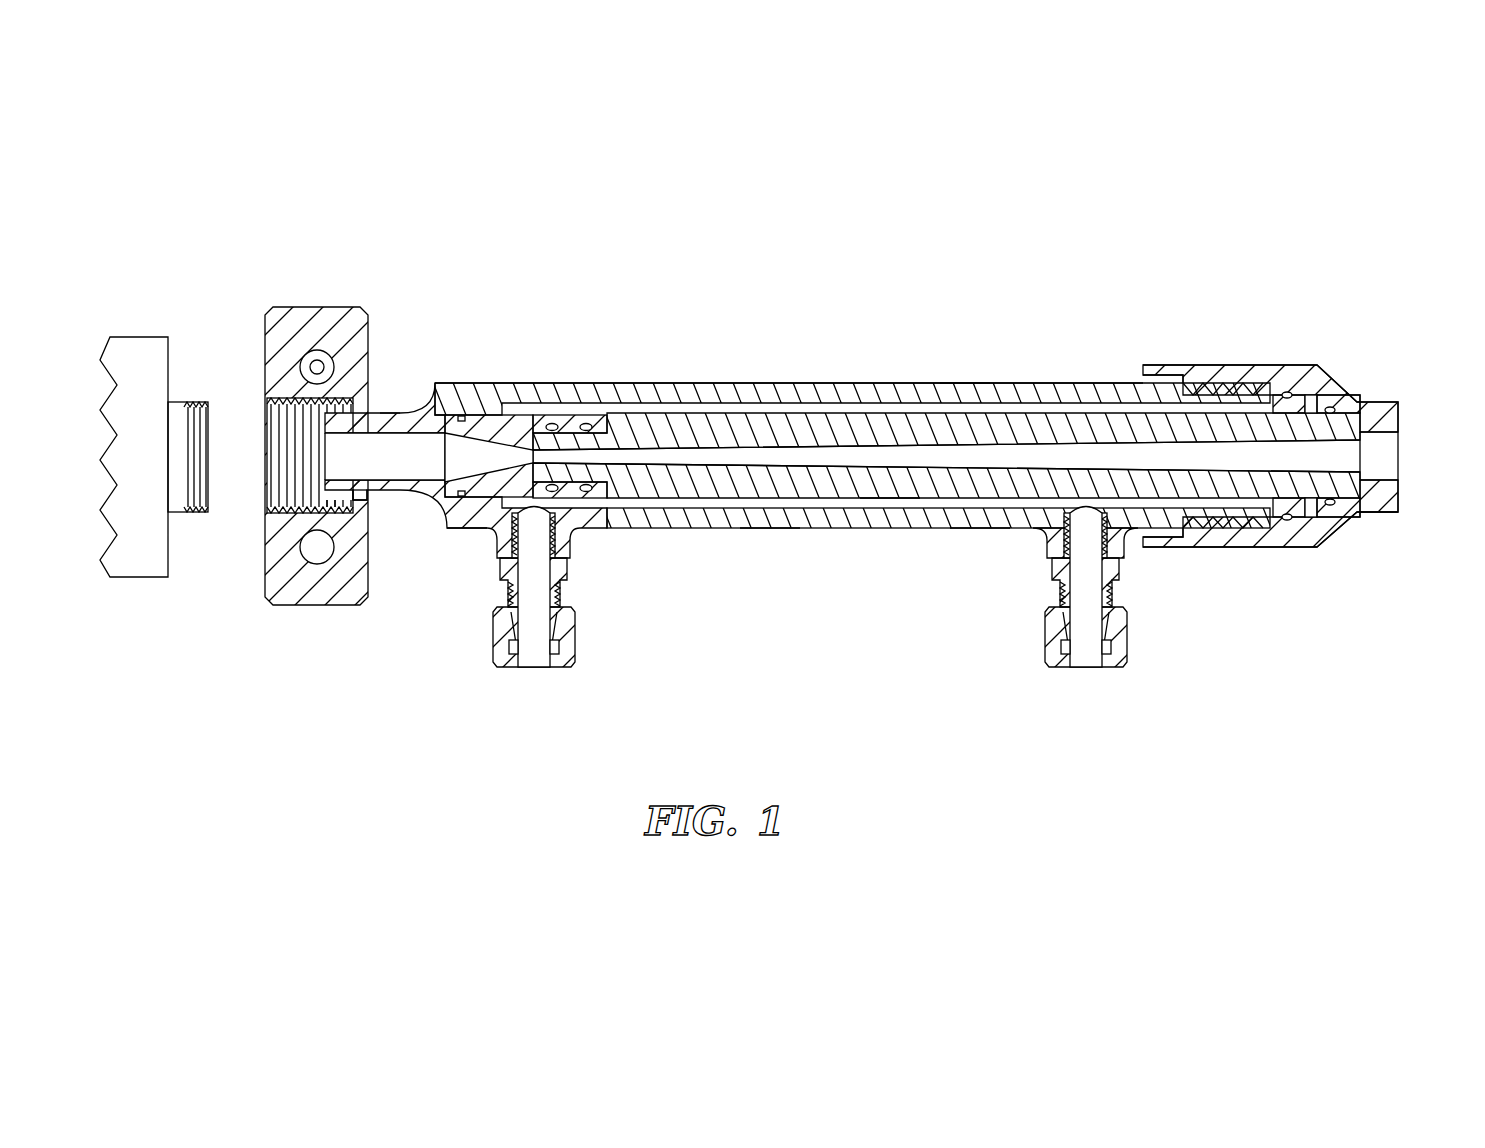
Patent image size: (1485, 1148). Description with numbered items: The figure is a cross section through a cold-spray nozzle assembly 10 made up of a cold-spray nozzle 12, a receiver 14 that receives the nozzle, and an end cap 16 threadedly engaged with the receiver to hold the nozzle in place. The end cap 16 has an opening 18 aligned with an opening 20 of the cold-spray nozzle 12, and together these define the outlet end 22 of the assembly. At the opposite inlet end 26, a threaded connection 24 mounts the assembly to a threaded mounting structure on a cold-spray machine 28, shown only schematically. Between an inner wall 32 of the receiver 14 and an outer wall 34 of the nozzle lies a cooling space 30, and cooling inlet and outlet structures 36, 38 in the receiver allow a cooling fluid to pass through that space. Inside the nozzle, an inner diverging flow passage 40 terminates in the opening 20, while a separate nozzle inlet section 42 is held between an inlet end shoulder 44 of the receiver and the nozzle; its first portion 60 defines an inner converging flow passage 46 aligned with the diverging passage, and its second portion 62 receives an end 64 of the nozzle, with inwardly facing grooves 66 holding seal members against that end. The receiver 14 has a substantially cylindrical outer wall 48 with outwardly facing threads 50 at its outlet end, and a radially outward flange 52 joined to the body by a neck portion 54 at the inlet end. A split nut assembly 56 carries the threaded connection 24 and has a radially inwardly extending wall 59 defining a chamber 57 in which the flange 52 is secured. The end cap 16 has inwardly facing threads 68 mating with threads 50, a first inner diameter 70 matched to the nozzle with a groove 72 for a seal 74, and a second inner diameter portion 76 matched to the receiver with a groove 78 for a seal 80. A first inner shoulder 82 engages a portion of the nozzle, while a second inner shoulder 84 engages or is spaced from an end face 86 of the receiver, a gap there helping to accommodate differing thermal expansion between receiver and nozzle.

The cold-spray nozzle assembly 10 is at (1088, 243).
The cold-spray nozzle 12 is at (863, 428).
The receiver 14 is at (697, 393).
The end cap 16 is at (1325, 389).
The opening 18 is at (1403, 490).
The opening 20 is at (1400, 448).
The outlet end 22 is at (1393, 306).
The threaded connection 24 is at (290, 435).
The inlet end 26 is at (287, 284).
The cold-spray machine 28 is at (152, 461).
The cooling space 30 is at (770, 520).
The inner wall 32 is at (890, 490).
The outer wall 34 is at (978, 510).
The cooling inlet structure 36 is at (570, 622).
The cooling outlet structure 38 is at (1062, 662).
The inner diverging flow passage 40 is at (1050, 455).
The nozzle inlet section 42 is at (492, 402).
The inlet end shoulder 44 is at (418, 413).
The inner converging flow passage 46 is at (477, 455).
The cylindrical outer wall 48 is at (967, 384).
The outwardly facing threads 50 is at (1222, 527).
The flange 52 is at (372, 481).
The neck portion 54 is at (386, 414).
The split nut assembly 56 is at (273, 630).
The chamber 57 is at (345, 512).
The radially inwardly extending wall 59 is at (362, 500).
The first portion 60 is at (490, 478).
The second portion 62 is at (582, 423).
The end 64 is at (552, 432).
The inwardly facing grooves 66 is at (582, 494).
The inwardly facing threads 68 is at (1240, 384).
The first inner diameter 70 is at (1362, 400).
The groove 72 is at (1340, 402).
The seal 74 is at (1340, 519).
The second inner diameter portion 76 is at (1286, 392).
The groove 78 is at (1310, 400).
The seal 80 is at (1284, 522).
The first inner shoulder 82 is at (1385, 512).
The second inner shoulder 84 is at (1328, 507).
The end face 86 is at (1310, 518).